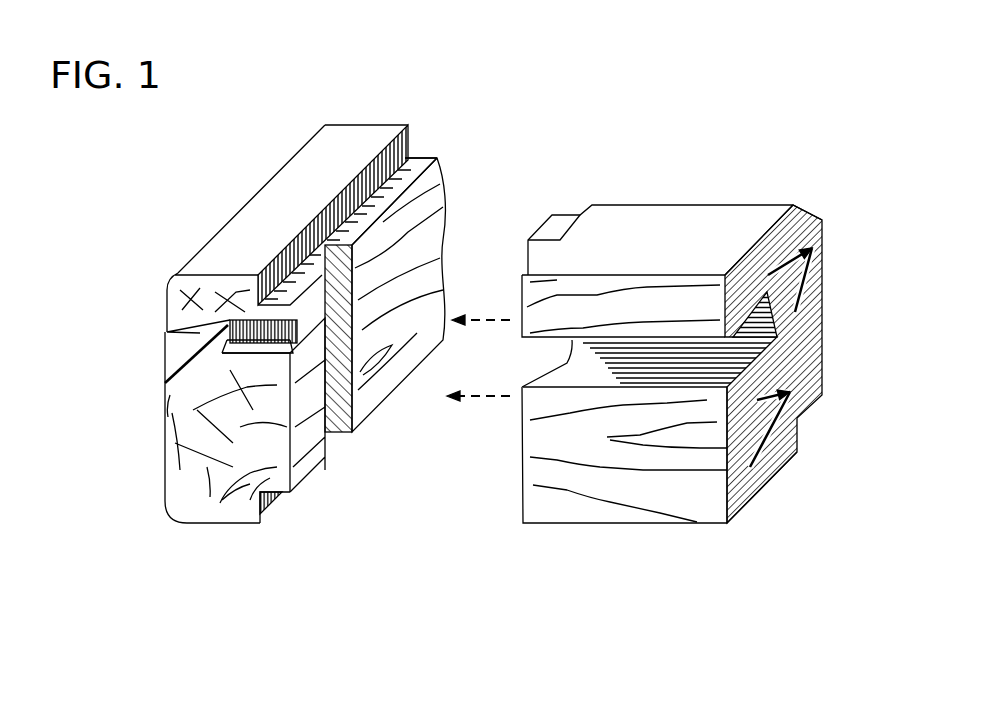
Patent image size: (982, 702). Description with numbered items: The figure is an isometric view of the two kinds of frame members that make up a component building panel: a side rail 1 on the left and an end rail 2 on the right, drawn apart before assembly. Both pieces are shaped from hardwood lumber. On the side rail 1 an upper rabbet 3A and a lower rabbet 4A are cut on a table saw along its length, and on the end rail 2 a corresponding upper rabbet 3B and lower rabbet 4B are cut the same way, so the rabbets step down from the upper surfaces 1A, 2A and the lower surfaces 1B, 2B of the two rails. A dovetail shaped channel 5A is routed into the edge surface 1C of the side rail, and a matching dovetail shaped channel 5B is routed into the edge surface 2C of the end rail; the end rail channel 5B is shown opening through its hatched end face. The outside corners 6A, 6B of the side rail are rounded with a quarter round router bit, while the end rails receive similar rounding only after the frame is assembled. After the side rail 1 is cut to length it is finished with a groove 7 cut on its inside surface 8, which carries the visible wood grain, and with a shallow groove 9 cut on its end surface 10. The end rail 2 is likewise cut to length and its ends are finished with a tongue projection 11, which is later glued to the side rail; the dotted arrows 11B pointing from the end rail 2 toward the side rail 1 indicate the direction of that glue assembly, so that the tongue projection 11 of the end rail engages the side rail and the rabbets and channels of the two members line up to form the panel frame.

The side rail 1 is at (317, 162).
The upper surface of side rail 1A is at (253, 228).
The lower surface of side rail 1B is at (207, 525).
The edge surface of side rail 1C is at (165, 458).
The end rail 2 is at (550, 500).
The upper surface of end rail 2A is at (635, 220).
The lower surface of end rail 2B is at (745, 513).
The edge surface of end rail 2C is at (683, 498).
The upper rabbet of side rail 3A is at (410, 150).
The upper rabbet of end rail 3B is at (800, 215).
The lower rabbet of side rail 4A is at (272, 497).
The lower rabbet of end rail 4B is at (805, 420).
The dovetail shaped channel of side rail 5A is at (195, 376).
The dovetail shaped channel of end rail 5B is at (800, 340).
The outside corner 6A is at (170, 283).
The outside corner 6B is at (168, 515).
The groove 7 is at (342, 437).
The inside surface 8 is at (435, 177).
The shallow groove 9 is at (167, 332).
The end surface 10 is at (225, 505).
The tongue projection 11 is at (550, 228).
The dotted arrows 11B is at (479, 358).